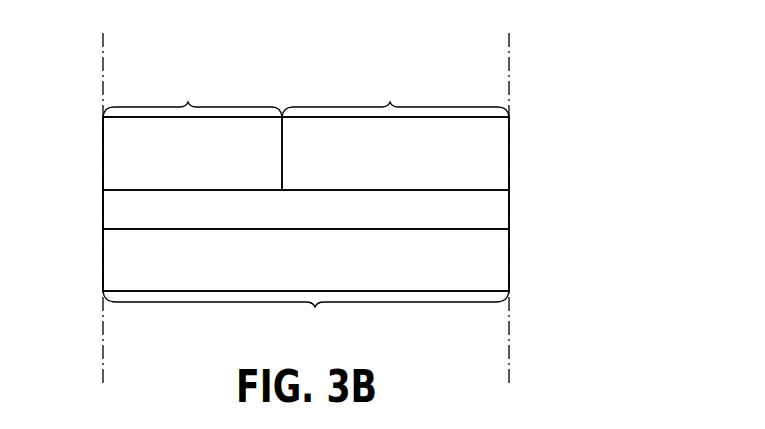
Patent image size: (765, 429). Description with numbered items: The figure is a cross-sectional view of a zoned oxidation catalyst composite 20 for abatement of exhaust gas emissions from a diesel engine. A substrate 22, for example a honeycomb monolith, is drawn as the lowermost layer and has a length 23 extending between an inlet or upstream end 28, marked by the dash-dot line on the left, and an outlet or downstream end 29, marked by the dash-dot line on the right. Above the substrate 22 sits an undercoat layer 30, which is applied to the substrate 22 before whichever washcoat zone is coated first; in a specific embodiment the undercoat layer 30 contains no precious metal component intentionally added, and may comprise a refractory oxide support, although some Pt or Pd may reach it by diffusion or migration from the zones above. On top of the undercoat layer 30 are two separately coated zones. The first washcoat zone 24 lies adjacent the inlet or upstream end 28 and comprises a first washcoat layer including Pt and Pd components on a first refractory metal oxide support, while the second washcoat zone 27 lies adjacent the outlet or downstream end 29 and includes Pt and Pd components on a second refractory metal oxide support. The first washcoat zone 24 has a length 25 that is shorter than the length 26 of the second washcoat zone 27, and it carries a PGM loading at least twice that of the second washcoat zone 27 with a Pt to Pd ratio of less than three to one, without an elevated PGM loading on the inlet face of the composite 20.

The zoned oxidation catalyst composite 20 is at (576, 127).
The substrate 22 is at (497, 261).
The length 23 is at (306, 313).
The first washcoat zone 24 is at (113, 160).
The length 25 is at (192, 98).
The length 26 is at (395, 98).
The second washcoat zone 27 is at (498, 155).
The inlet or upstream end 28 is at (103, 77).
The outlet or downstream end 29 is at (509, 77).
The undercoat layer 30 is at (497, 208).